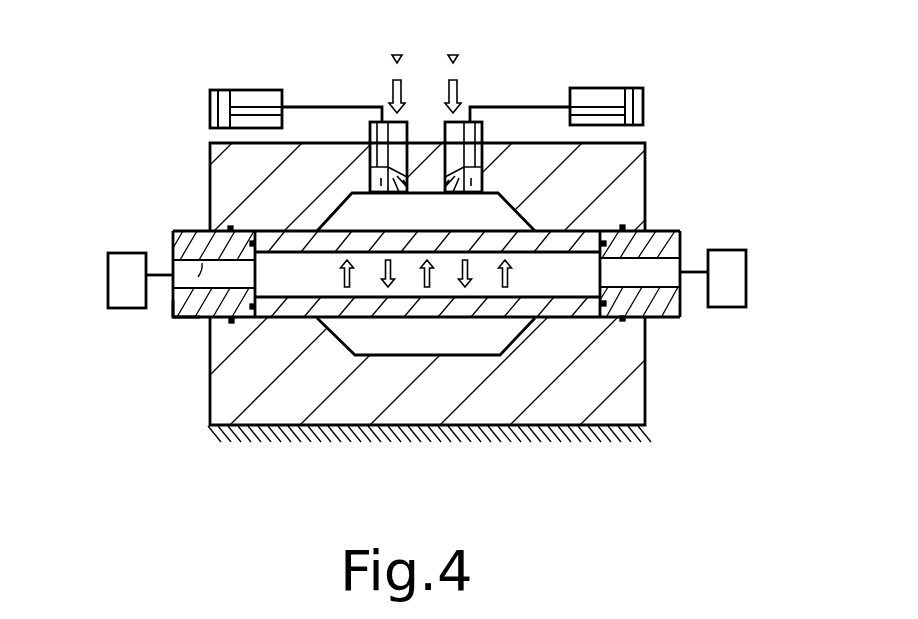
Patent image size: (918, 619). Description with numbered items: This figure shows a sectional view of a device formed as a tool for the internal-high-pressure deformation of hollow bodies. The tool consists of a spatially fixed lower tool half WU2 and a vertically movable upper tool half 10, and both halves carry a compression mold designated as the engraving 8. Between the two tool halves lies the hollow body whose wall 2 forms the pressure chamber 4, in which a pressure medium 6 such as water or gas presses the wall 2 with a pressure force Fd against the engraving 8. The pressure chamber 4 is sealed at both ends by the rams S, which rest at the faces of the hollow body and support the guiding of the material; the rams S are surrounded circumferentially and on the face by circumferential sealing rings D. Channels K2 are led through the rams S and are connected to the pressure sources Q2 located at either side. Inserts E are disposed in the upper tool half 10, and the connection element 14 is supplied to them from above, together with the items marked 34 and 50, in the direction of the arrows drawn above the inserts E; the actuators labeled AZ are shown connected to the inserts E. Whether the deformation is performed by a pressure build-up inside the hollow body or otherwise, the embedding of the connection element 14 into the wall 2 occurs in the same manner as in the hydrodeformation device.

The upper tool half 10 is at (617, 155).
The lower tool half WU2 is at (593, 390).
The engraving 8 is at (528, 212).
The wall 2 is at (527, 238).
The pressure chamber 4 is at (683, 312).
The pressure medium 6 is at (566, 284).
The pressure force Fd is at (397, 270).
The rams S is at (187, 237).
The channels K2 is at (173, 317).
The sealing rings D is at (230, 227).
The pressure sources Q2 is at (118, 280).
The actuating cylinder AZ is at (262, 90).
The inserts E is at (370, 138).
The connection element 14 is at (429, 61).
The feed 34 is at (453, 96).
The feed 50 is at (453, 59).